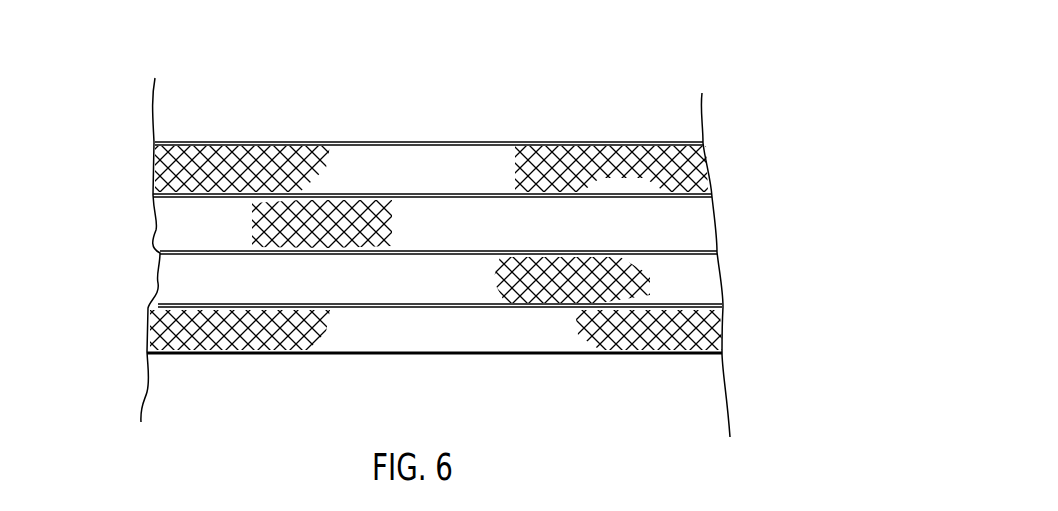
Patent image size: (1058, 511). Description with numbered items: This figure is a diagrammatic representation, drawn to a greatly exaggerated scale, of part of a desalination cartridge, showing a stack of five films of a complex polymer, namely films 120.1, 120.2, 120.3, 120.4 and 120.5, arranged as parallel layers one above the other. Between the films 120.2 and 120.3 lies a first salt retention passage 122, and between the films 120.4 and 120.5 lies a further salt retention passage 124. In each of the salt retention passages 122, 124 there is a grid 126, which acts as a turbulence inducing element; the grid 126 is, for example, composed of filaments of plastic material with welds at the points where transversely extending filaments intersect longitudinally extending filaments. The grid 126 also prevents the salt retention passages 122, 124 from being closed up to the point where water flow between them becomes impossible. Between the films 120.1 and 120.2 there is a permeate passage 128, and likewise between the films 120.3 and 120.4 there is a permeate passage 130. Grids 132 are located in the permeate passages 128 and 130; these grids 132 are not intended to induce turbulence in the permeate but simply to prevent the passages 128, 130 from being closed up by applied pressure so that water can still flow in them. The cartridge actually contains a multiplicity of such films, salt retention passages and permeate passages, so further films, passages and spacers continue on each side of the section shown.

The film 120.1 is at (705, 143).
The film 120.2 is at (713, 197).
The film 120.3 is at (718, 253).
The film 120.4 is at (723, 307).
The film 120.5 is at (723, 353).
The first salt retention passage 122 is at (143, 235).
The further salt retention passage 124 is at (138, 342).
The grid 126 is at (290, 227).
The permeate passage 128 is at (140, 178).
The permeate passage 130 is at (145, 290).
The grid 132 is at (558, 178).